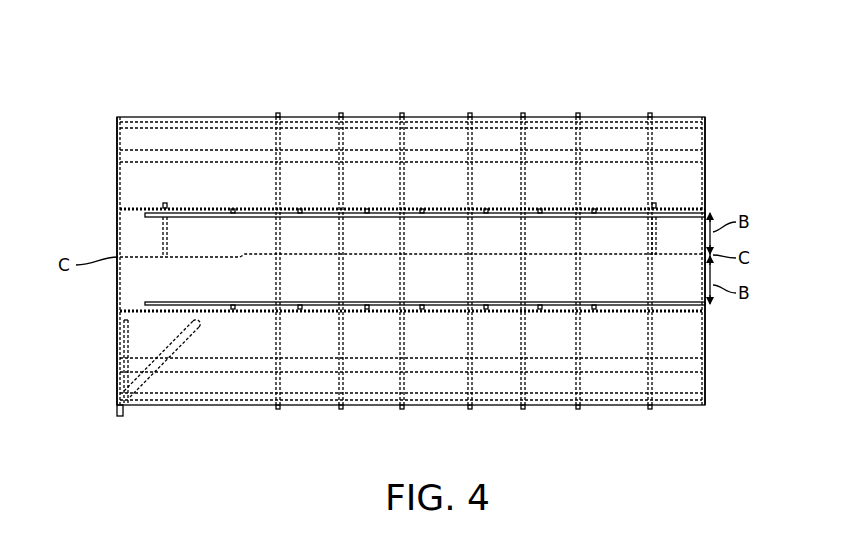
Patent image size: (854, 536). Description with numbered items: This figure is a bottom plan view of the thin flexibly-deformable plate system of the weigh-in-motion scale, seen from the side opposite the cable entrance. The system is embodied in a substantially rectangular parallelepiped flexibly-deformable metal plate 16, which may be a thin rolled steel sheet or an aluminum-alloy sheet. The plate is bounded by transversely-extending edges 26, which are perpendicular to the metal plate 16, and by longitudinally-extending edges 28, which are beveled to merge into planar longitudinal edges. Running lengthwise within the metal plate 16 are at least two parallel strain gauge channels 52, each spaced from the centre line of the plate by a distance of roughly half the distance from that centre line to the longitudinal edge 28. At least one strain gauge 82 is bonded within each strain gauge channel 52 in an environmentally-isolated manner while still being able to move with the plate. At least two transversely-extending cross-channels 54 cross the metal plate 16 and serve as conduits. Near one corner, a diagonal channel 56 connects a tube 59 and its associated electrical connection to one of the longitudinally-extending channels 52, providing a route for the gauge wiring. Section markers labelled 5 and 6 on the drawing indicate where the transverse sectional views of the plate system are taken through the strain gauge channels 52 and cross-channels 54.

The flexibly-deformable metal plate 16 is at (252, 84).
The transversely-extending edges 26 is at (117, 168).
The longitudinally-extending edges 28 is at (537, 117).
The strain gauge channels 52 is at (145, 215).
The transversely-extending cross-channels 54 is at (165, 246).
The diagonal channel 56 is at (183, 338).
The tube 59 is at (117, 409).
The strain gauge 82 is at (300, 209).
The section line 5- 5 is at (193, 238).
The section line 6- 6 is at (308, 238).